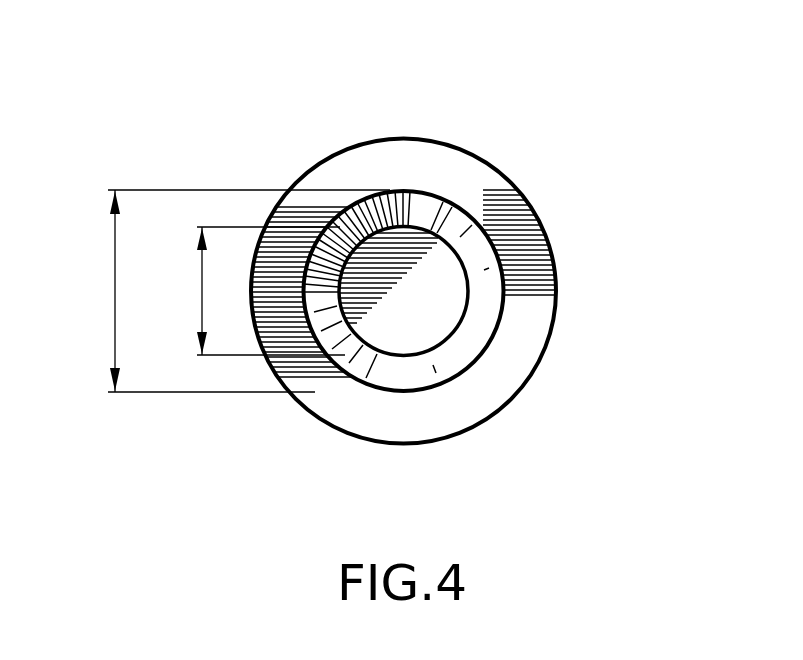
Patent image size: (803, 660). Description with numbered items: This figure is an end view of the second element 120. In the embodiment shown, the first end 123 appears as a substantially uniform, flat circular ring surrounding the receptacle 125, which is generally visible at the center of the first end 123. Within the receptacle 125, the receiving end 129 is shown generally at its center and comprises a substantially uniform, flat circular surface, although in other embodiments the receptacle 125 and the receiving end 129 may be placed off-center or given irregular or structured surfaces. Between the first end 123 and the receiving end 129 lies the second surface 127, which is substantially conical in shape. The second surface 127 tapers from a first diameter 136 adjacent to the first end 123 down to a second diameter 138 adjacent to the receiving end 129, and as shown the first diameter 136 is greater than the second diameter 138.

The second element 120 is at (557, 120).
The first end 123 is at (450, 172).
The receptacle 125 is at (313, 405).
The second surface 127 is at (376, 212).
The receiving end 129 is at (422, 312).
The first diameter 136 is at (225, 291).
The second diameter 138 is at (245, 291).